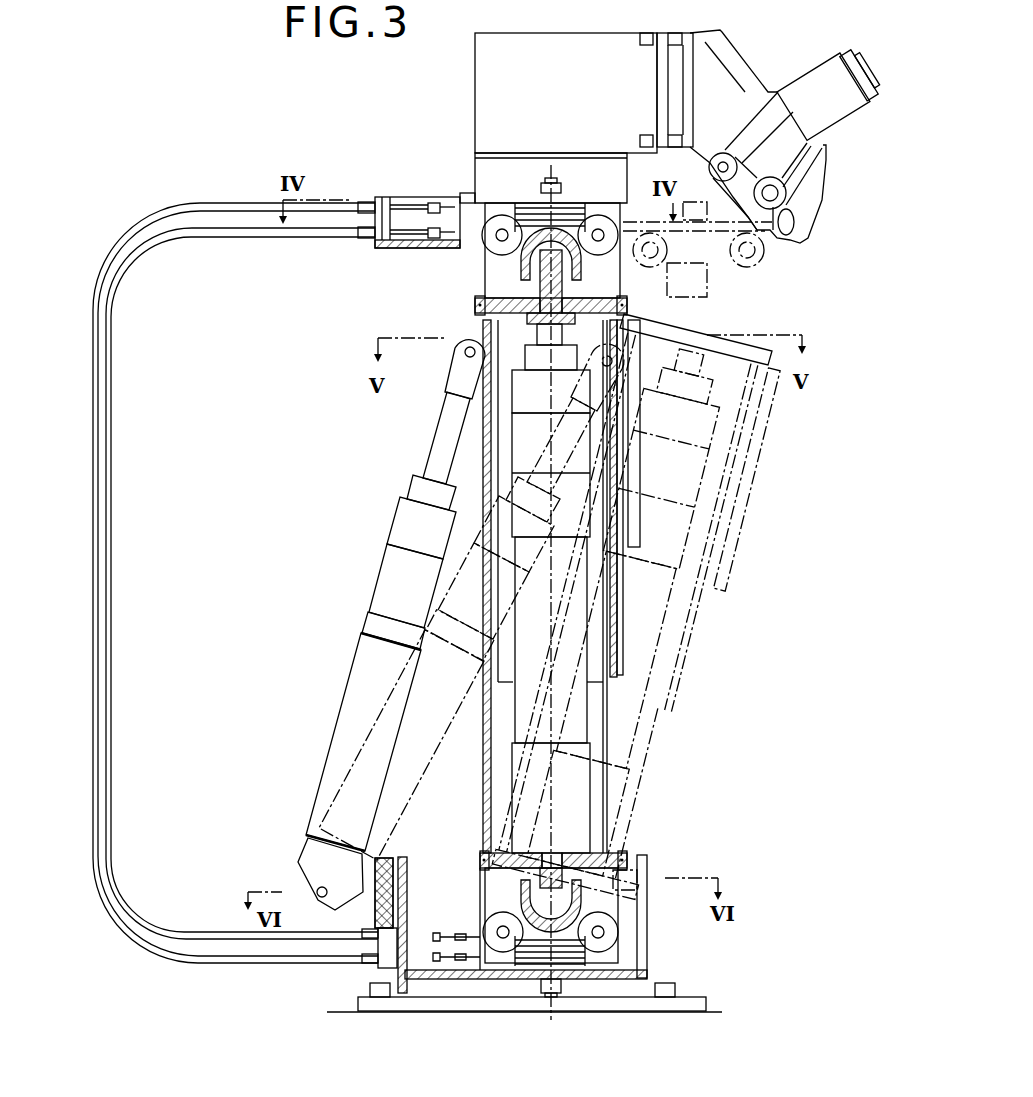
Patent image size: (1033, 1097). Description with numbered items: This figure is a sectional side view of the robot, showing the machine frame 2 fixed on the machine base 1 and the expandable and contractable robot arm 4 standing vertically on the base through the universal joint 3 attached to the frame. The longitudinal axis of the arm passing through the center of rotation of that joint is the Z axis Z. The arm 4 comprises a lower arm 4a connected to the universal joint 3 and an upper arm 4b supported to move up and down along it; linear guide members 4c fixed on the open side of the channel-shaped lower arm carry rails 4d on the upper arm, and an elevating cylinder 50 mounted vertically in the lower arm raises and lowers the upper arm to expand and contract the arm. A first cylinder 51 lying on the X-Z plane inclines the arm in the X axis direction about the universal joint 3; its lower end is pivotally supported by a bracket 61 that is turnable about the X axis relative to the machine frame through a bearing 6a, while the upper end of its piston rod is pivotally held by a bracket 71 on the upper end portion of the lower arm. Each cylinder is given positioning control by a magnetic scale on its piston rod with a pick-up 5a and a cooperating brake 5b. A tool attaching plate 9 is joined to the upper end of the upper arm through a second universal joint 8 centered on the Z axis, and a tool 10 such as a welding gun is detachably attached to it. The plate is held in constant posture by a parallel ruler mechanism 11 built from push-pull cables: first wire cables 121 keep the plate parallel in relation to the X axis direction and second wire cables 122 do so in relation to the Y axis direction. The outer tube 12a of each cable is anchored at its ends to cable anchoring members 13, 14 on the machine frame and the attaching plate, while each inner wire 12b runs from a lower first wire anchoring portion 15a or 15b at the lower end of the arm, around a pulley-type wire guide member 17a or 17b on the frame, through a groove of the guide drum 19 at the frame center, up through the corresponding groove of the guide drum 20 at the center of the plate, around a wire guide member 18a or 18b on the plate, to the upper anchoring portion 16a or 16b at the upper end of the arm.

The machine base 1 is at (415, 1000).
The machine frame 2 is at (400, 985).
The universal joint 3 is at (590, 895).
The robot arm 4 is at (608, 714).
The lower arm 4a is at (484, 778).
The upper arm 4b is at (496, 437).
The linear guide member 4c is at (636, 525).
The rail 4d is at (622, 628).
The pick-up 5a is at (397, 517).
The brake 5b is at (381, 576).
The elevating cylinder 50 is at (532, 708).
The first cylinder 51 is at (356, 674).
The bearing 6a is at (390, 857).
The bracket 61 is at (300, 866).
The bracket 71 is at (457, 373).
The universal joint 8 is at (521, 274).
The tool attaching plate 9 is at (505, 200).
The tool 10 is at (814, 184).
The parallel ruler mechanism 11 is at (118, 555).
The first wire cable 121 is at (447, 1012).
The second wire cable 122 is at (207, 238).
The outer tube 12a is at (322, 214).
The inner wire 12b is at (515, 264).
The cable anchoring member 13 is at (385, 953).
The cable anchoring member 14 is at (403, 249).
The first wire anchoring portion 15a is at (487, 852).
The first wire anchoring portion 15b is at (627, 855).
The first wire anchoring portion 16a is at (476, 306).
The first wire anchoring portion 16b is at (703, 313).
The wire guide member 17a is at (503, 952).
The wire guide member 17b is at (620, 933).
The wire guide member 18a is at (489, 220).
The wire guide member 18b is at (600, 216).
The guide drum 19 is at (560, 953).
The guide drum 20 is at (551, 177).
The Z axis Z is at (565, 785).